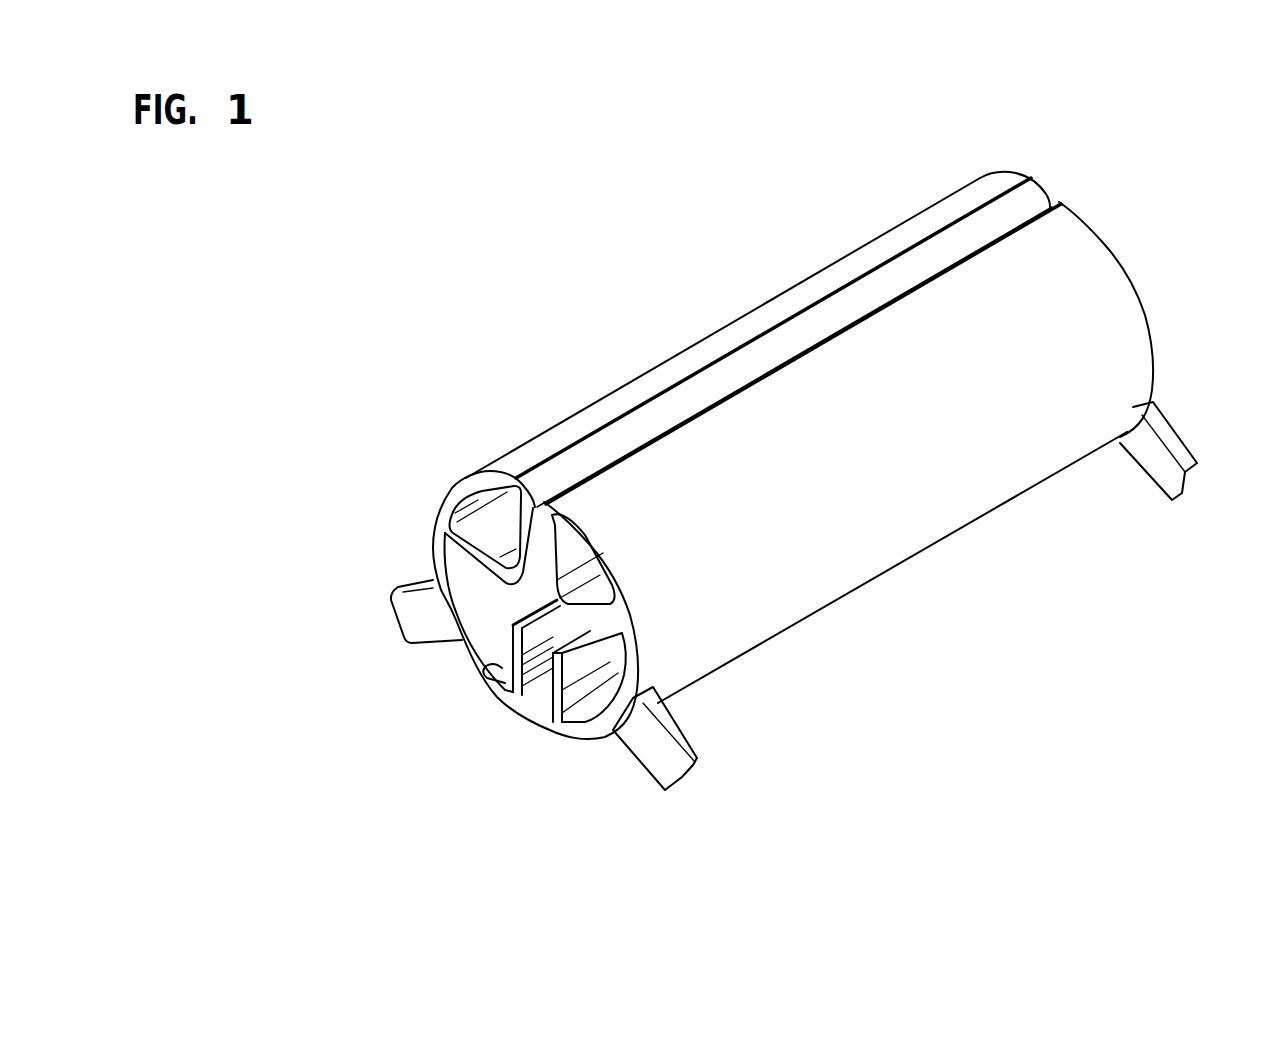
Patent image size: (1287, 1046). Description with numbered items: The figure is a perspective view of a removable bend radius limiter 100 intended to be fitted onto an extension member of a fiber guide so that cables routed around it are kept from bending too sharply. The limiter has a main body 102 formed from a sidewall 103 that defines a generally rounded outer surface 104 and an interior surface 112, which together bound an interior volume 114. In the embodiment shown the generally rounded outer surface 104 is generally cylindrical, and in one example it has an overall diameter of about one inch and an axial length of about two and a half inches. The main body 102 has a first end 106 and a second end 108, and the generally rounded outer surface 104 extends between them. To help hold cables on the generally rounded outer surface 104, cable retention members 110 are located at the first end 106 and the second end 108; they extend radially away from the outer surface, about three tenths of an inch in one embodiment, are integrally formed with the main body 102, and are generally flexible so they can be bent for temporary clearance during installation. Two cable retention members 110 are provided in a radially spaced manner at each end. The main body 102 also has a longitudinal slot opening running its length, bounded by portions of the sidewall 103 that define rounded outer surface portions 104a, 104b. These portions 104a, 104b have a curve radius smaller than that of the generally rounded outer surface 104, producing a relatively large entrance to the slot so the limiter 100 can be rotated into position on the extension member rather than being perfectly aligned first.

The removable bend radius limiter 100 is at (458, 252).
The main body 102 is at (442, 497).
The sidewall 103 is at (563, 728).
The generally rounded outer surface 104 is at (772, 585).
The rounded outer surface portion 104a is at (1062, 198).
The rounded outer surface portion 104b is at (957, 243).
The first end 106 is at (472, 658).
The second end 108 is at (1123, 255).
The cable retention members 110 is at (407, 617).
The interior surface 112 is at (482, 687).
The interior volume 114 is at (475, 593).